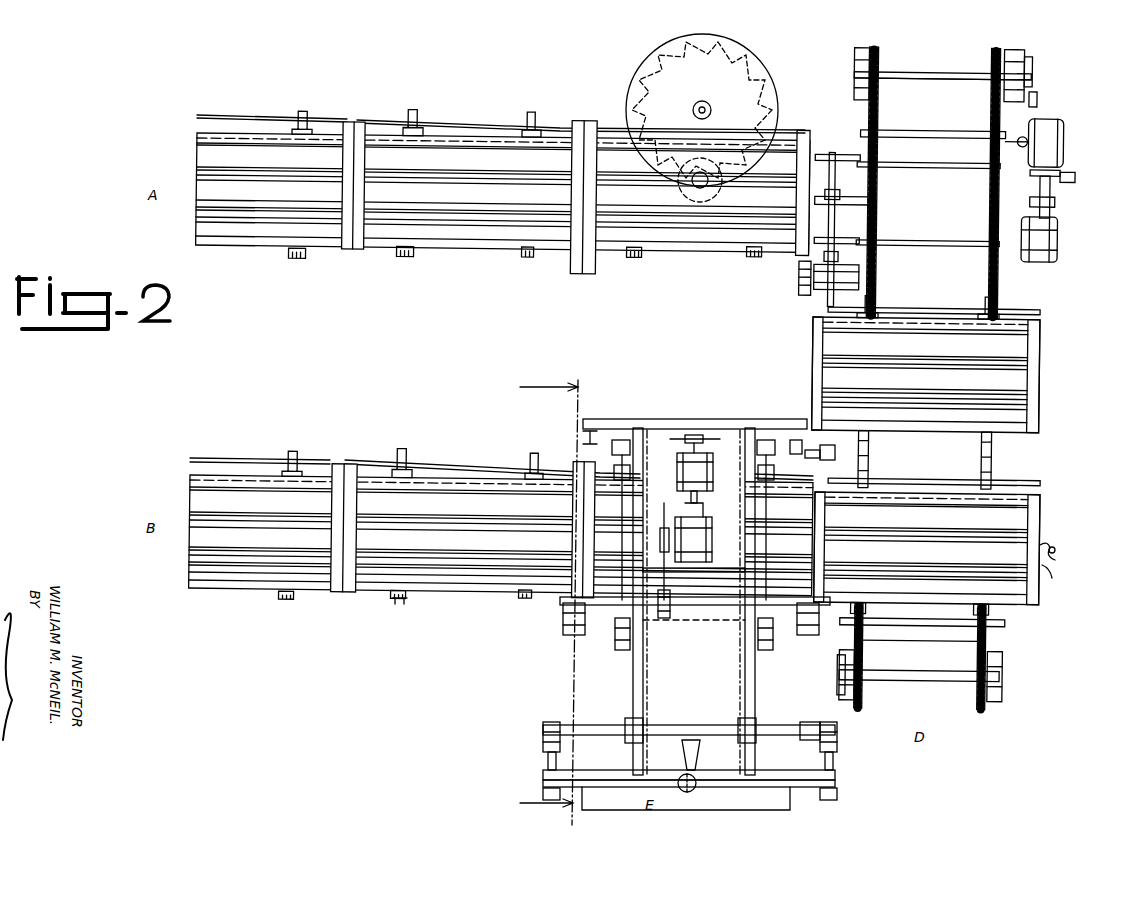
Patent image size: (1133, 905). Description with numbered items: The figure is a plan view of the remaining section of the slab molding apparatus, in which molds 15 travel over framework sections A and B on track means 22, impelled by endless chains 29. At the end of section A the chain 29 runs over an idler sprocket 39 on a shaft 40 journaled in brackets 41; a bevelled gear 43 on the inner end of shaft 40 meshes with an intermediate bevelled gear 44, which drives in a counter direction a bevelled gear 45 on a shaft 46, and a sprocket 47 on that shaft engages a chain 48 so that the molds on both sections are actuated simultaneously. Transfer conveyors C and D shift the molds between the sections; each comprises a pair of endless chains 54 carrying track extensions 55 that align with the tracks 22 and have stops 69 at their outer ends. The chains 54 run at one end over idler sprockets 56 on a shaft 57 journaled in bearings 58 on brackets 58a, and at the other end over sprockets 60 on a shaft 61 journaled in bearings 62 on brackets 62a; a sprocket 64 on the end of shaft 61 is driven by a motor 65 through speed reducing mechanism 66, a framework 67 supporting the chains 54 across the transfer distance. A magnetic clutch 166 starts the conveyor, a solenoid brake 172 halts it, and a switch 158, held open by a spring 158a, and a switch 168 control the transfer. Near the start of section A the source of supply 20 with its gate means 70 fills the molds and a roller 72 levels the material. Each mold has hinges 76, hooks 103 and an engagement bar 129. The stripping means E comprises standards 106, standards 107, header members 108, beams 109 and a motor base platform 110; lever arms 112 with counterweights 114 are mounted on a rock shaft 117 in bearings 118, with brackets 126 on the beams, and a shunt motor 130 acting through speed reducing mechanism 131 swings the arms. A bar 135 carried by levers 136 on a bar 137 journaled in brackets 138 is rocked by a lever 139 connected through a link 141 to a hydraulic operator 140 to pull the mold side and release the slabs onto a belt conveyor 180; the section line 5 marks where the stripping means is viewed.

The molds 15 is at (458, 135).
The source of supply 20 is at (640, 88).
The track means 22 is at (840, 155).
The endless chains 29 is at (842, 195).
The idler sprocket 39 is at (870, 203).
The shaft 40 is at (840, 170).
The brackets 41 is at (832, 153).
The bevelled gear 43 is at (840, 257).
The intermediate bevelled gear 44 is at (862, 272).
The bevelled gear 45 is at (812, 290).
The shaft 46 is at (828, 448).
The sprocket 47 is at (870, 460).
The chain 48 is at (796, 440).
The endless chains 54 is at (978, 640).
The track extensions 55 is at (949, 240).
The idler sprockets 56 is at (975, 710).
The shaft 57 is at (910, 682).
The bearings 58 is at (1003, 675).
The brackets 58a is at (840, 685).
The sprockets 60 is at (1000, 78).
The shaft 61 is at (930, 72).
The bearings 62 is at (853, 86).
The brackets 62a is at (1036, 95).
The sprocket 64 is at (1031, 70).
The motor 65 is at (1060, 240).
The speed reducing mechanism 66 is at (1064, 140).
The framework 67 is at (934, 130).
The stops 69 is at (998, 250).
The gate means 70 is at (722, 190).
The roller 72 is at (572, 250).
The hinges 76 is at (400, 600).
The hooks 103 is at (302, 108).
The standards 106 is at (548, 760).
The standards 107 is at (583, 438).
The header members 108 is at (612, 419).
The beams 109 is at (740, 684).
The motor base platform 110 is at (733, 428).
The lever arms 112 is at (575, 602).
The counterweights 114 is at (620, 650).
The rock shaft 117 is at (712, 586).
The bearings 118 is at (740, 605).
The brackets 126 is at (628, 440).
The engagement bar 129 is at (383, 119).
The shunt motor 130 is at (677, 472).
The speed reducing mechanism 131 is at (690, 535).
The bar 135 is at (674, 725).
The levers 136 is at (620, 718).
The bar 137 is at (810, 722).
The brackets 138 is at (543, 737).
The lever 139 is at (712, 753).
The hydraulic operator 140 is at (693, 792).
The link 141 is at (837, 794).
The switch 158 is at (1057, 552).
The spring 158a is at (1055, 578).
The magnetic clutch 166 is at (1055, 200).
The switch 168 is at (1022, 135).
The solenoid brake 172 is at (1075, 172).
The belt conveyor 180 is at (792, 802).
The section line 5 is at (539, 601).